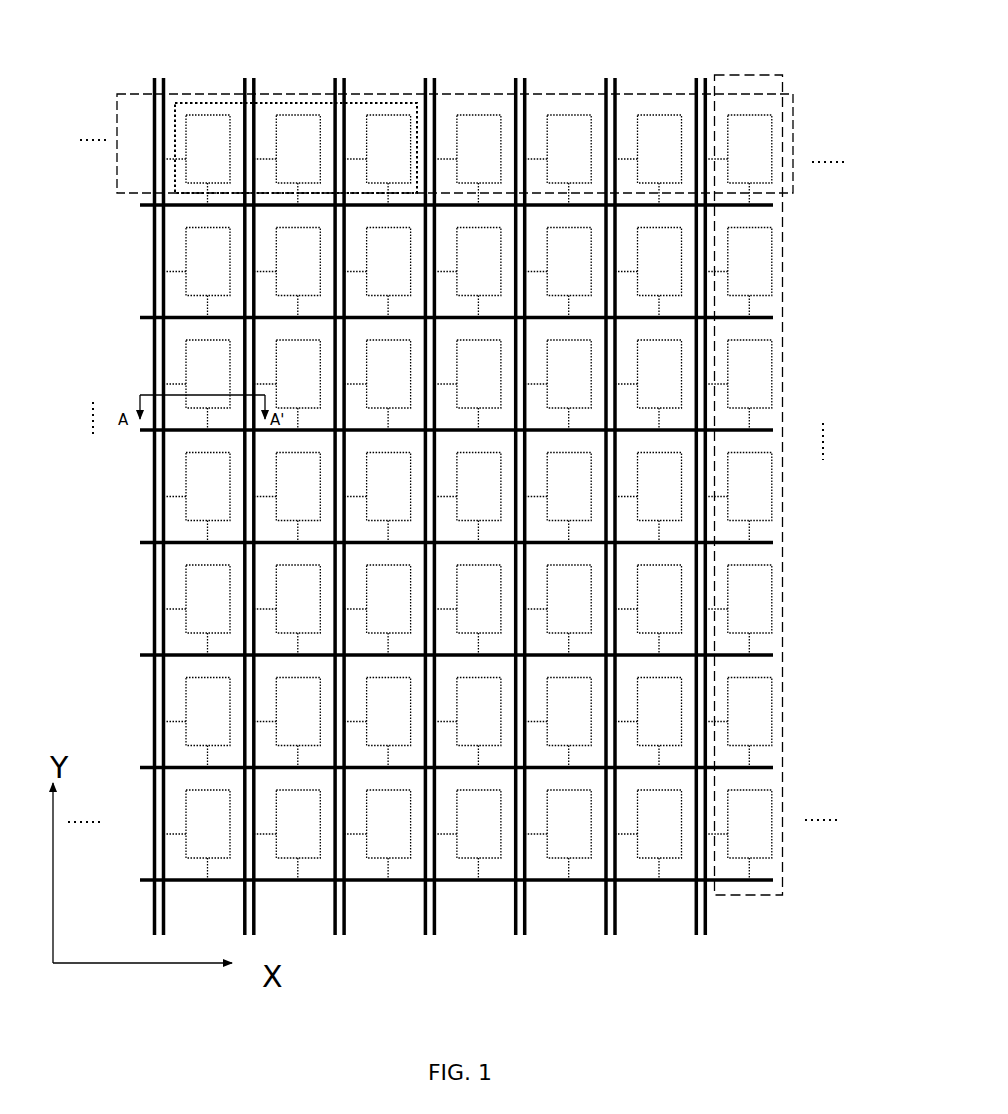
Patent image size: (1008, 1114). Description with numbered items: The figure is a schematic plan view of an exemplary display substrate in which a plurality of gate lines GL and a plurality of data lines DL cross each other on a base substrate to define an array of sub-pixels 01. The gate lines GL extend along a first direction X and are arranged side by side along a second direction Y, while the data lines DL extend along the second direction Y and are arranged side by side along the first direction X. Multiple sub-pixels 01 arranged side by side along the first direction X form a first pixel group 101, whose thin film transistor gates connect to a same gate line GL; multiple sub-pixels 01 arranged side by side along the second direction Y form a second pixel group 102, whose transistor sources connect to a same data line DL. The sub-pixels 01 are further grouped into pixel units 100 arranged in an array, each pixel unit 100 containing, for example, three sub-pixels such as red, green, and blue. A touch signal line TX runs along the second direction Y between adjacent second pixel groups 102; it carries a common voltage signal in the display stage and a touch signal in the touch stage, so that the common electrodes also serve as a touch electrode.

The sub-pixel 01 is at (210, 128).
The touch signal line TX is at (243, 90).
The data line DL is at (253, 93).
The gate line GL is at (140, 205).
The pixel unit 100 is at (360, 103).
The first pixel group 101 is at (795, 122).
The second pixel group 102 is at (782, 260).